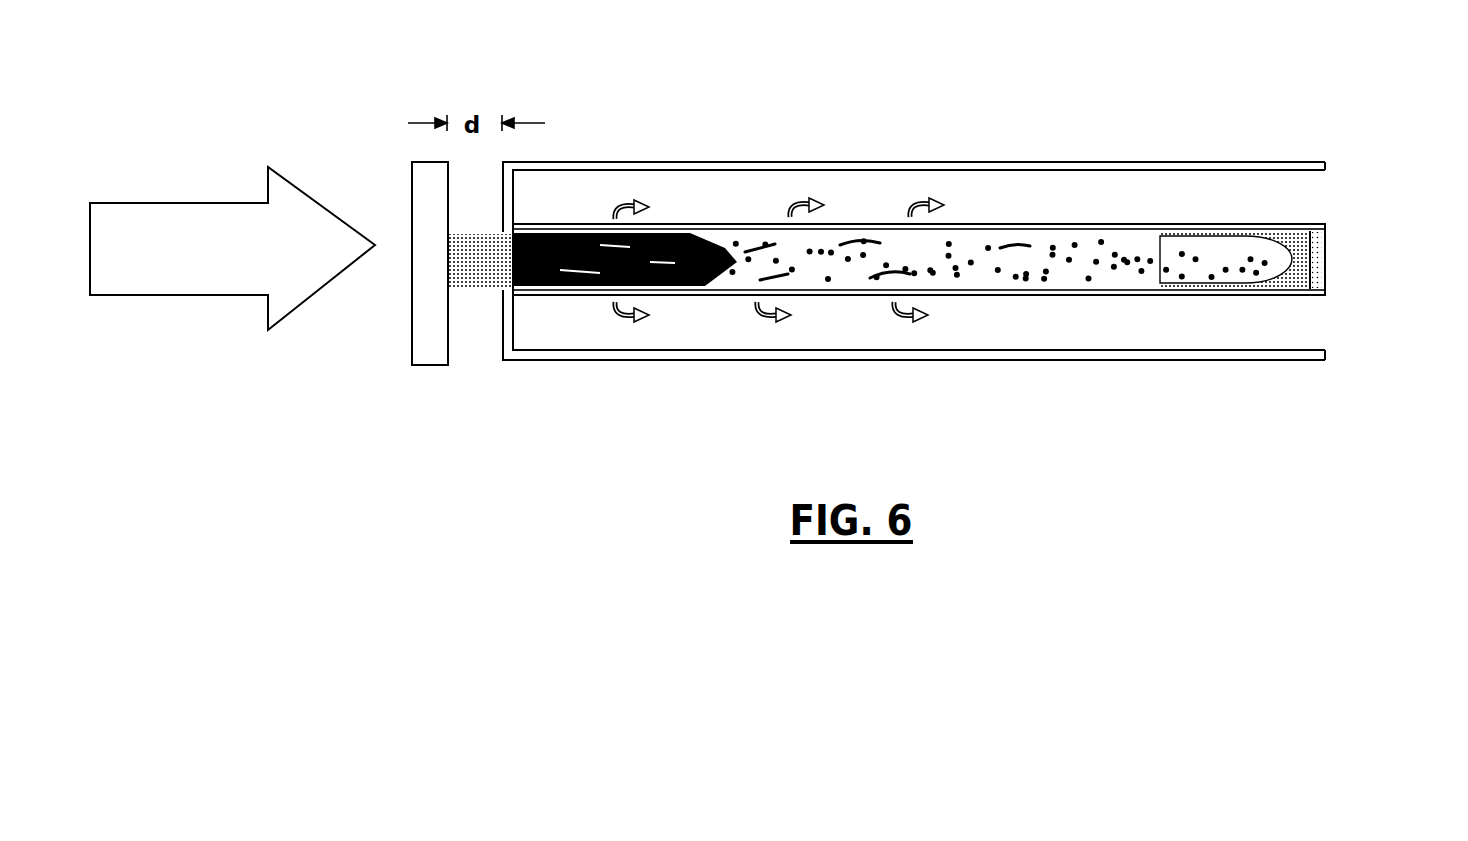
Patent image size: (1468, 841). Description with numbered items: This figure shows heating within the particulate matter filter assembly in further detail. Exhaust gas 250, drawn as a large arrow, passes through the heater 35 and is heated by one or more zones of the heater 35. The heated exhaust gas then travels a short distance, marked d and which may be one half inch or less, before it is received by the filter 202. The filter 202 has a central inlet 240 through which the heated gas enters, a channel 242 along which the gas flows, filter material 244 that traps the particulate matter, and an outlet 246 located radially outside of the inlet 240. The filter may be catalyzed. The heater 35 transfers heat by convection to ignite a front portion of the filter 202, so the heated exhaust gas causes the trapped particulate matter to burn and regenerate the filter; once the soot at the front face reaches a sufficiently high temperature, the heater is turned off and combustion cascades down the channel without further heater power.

The exhaust gas 250 is at (208, 295).
The heater 35 is at (430, 365).
The central inlet 240 is at (489, 296).
The filter 202 is at (812, 162).
The filter material 244 is at (967, 226).
The channel 242 is at (1012, 232).
The outlet 246 is at (1330, 203).